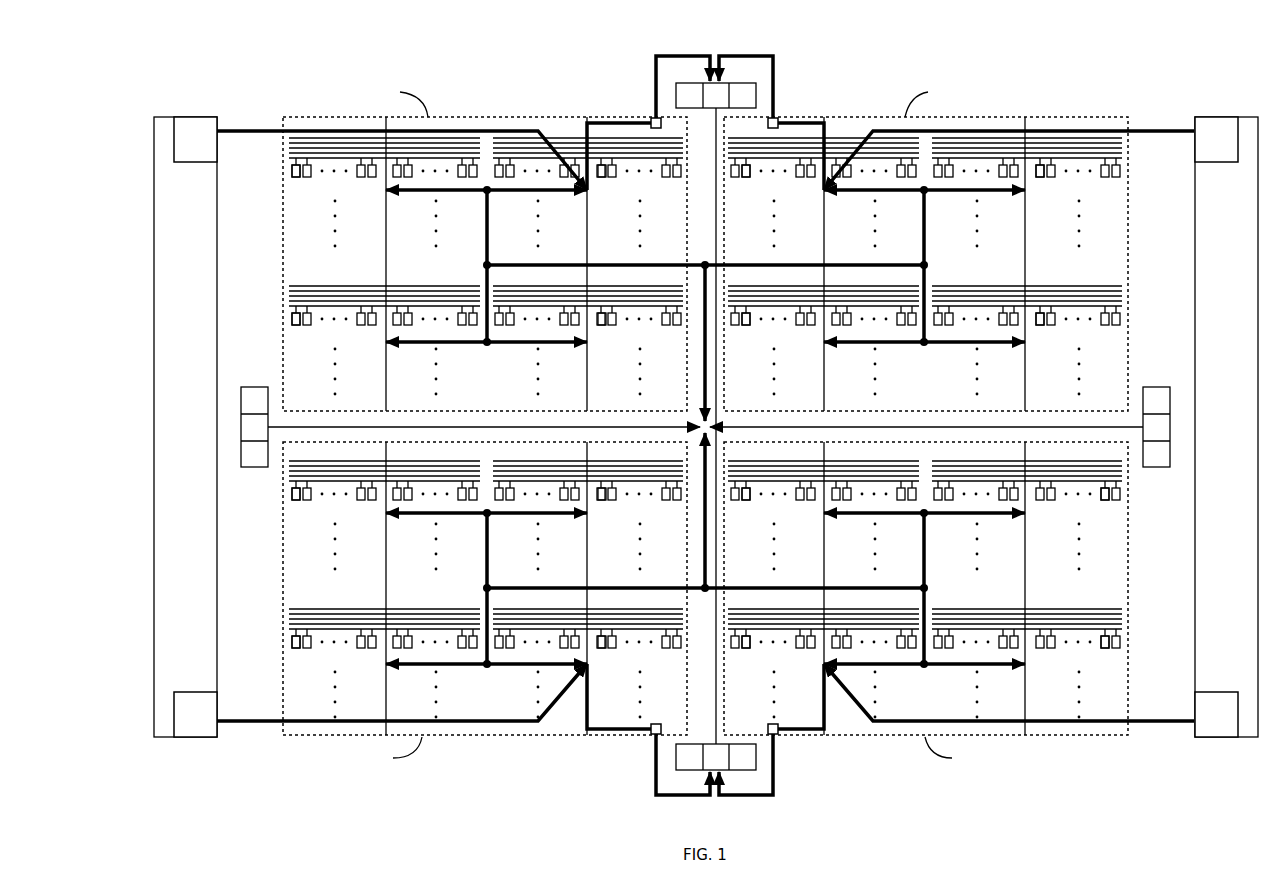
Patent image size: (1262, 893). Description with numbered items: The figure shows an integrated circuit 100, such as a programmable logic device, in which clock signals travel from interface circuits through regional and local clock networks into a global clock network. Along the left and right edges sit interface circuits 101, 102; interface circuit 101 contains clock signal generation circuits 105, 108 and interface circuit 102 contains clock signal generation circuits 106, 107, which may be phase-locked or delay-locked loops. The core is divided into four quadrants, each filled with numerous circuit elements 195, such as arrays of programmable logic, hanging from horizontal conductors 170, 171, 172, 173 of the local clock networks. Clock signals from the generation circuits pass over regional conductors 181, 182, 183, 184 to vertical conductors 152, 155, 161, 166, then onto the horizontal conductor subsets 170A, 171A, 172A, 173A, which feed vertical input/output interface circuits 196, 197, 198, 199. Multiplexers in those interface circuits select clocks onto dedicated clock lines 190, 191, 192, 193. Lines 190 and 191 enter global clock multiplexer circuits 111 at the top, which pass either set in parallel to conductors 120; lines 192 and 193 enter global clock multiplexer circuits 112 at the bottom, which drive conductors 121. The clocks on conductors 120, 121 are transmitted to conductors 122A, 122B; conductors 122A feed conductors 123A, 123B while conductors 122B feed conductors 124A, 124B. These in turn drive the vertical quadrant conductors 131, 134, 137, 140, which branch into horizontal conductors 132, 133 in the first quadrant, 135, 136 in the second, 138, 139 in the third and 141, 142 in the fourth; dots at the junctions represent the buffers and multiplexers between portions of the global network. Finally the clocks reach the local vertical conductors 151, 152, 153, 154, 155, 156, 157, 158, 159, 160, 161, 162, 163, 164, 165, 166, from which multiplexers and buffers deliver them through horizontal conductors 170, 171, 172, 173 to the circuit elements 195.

The integrated circuit 100 is at (695, 419).
The interface circuit 101 is at (218, 268).
The interface circuit 102 is at (1193, 268).
The clock signal generation circuit 105 is at (182, 120).
The clock signal generation circuit 106 is at (1218, 120).
The clock signal generation circuit 107 is at (1218, 735).
The clock signal generation circuit 108 is at (194, 737).
The global clock multiplexer circuits 111 is at (722, 83).
The global clock multiplexer circuits 112 is at (722, 770).
The conductors 120 is at (718, 193).
The conductors 121 is at (718, 522).
The conductors 122A is at (687, 350).
The conductors 122B is at (687, 510).
The conductors 123A is at (655, 265).
The conductors 123B is at (785, 265).
The conductors 124A is at (858, 588).
The conductors 124B is at (670, 576).
The conductors 131 is at (486, 238).
The conductors 132 is at (500, 192).
The conductors 133 is at (480, 344).
The conductors 134 is at (926, 238).
The conductors 135 is at (980, 192).
The conductors 136 is at (922, 344).
The conductors 137 is at (925, 566).
The conductors 138 is at (1003, 516).
The conductors 139 is at (926, 666).
The conductors 140 is at (486, 565).
The conductors 141 is at (422, 516).
The conductors 142 is at (478, 666).
The vertical conductors 151 is at (386, 222).
The vertical conductors 152 is at (585, 128).
The vertical conductors 153 is at (386, 365).
The vertical conductors 154 is at (587, 365).
The vertical conductors 155 is at (835, 128).
The vertical conductors 156 is at (1025, 240).
The vertical conductors 157 is at (824, 365).
The vertical conductors 158 is at (1025, 365).
The vertical conductors 159 is at (824, 540).
The vertical conductors 160 is at (1026, 535).
The vertical conductors 161 is at (826, 732).
The vertical conductors 162 is at (1025, 680).
The vertical conductors 163 is at (386, 548).
The vertical conductors 164 is at (587, 540).
The vertical conductors 165 is at (386, 680).
The vertical conductors 166 is at (587, 730).
The horizontal conductors 170 is at (328, 165).
The horizontal conductors 170A is at (622, 122).
The horizontal conductors 171 is at (1072, 175).
The horizontal conductors 171A is at (800, 122).
The horizontal conductors 172 is at (920, 462).
The horizontal conductors 172A is at (816, 740).
The horizontal conductors 173 is at (540, 462).
The horizontal conductors 173A is at (598, 740).
The conductors 181 is at (338, 132).
The conductors 182 is at (1063, 132).
The conductors 183 is at (1080, 737).
The conductors 184 is at (327, 737).
The dedicated clock lines 190 is at (656, 85).
The dedicated clock lines 191 is at (773, 85).
The dedicated clock lines 192 is at (773, 775).
The dedicated clock lines 193 is at (656, 775).
The circuit elements 195 is at (298, 178).
The vertical input/output interface circuit 196 is at (650, 118).
The vertical input/output interface circuit 197 is at (780, 118).
The vertical input/output interface circuit 198 is at (778, 726).
The vertical input/output interface circuit 199 is at (657, 725).